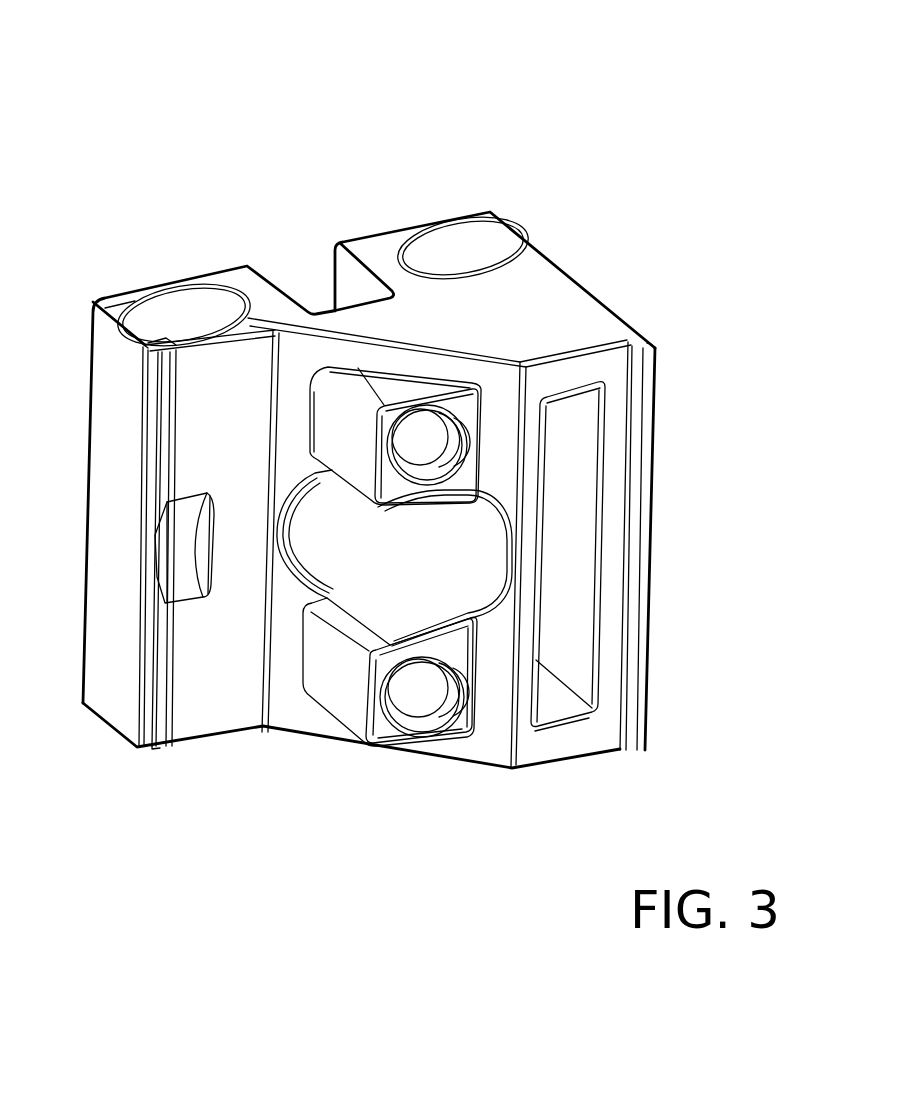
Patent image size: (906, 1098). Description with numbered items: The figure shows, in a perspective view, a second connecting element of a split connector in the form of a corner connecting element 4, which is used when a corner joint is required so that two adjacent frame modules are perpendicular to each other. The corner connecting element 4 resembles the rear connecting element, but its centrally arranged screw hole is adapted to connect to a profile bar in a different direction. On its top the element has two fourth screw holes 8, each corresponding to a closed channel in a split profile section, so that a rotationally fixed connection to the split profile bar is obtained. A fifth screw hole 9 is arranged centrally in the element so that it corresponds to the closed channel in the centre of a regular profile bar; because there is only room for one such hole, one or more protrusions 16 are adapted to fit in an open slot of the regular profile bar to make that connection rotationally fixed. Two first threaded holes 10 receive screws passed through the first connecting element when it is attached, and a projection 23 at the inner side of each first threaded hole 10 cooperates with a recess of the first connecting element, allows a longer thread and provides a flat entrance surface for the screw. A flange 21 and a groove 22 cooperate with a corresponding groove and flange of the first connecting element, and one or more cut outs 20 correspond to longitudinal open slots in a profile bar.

The corner connecting element 4 is at (700, 261).
The fourth screw hole 8 is at (183, 318).
The fifth screw hole 9 is at (315, 505).
The first threaded hole 10 is at (413, 433).
The protrusion 16 is at (404, 122).
The cut out 20 is at (350, 292).
The flange 21 is at (625, 732).
The groove 22 is at (143, 717).
The projection 23 is at (347, 393).